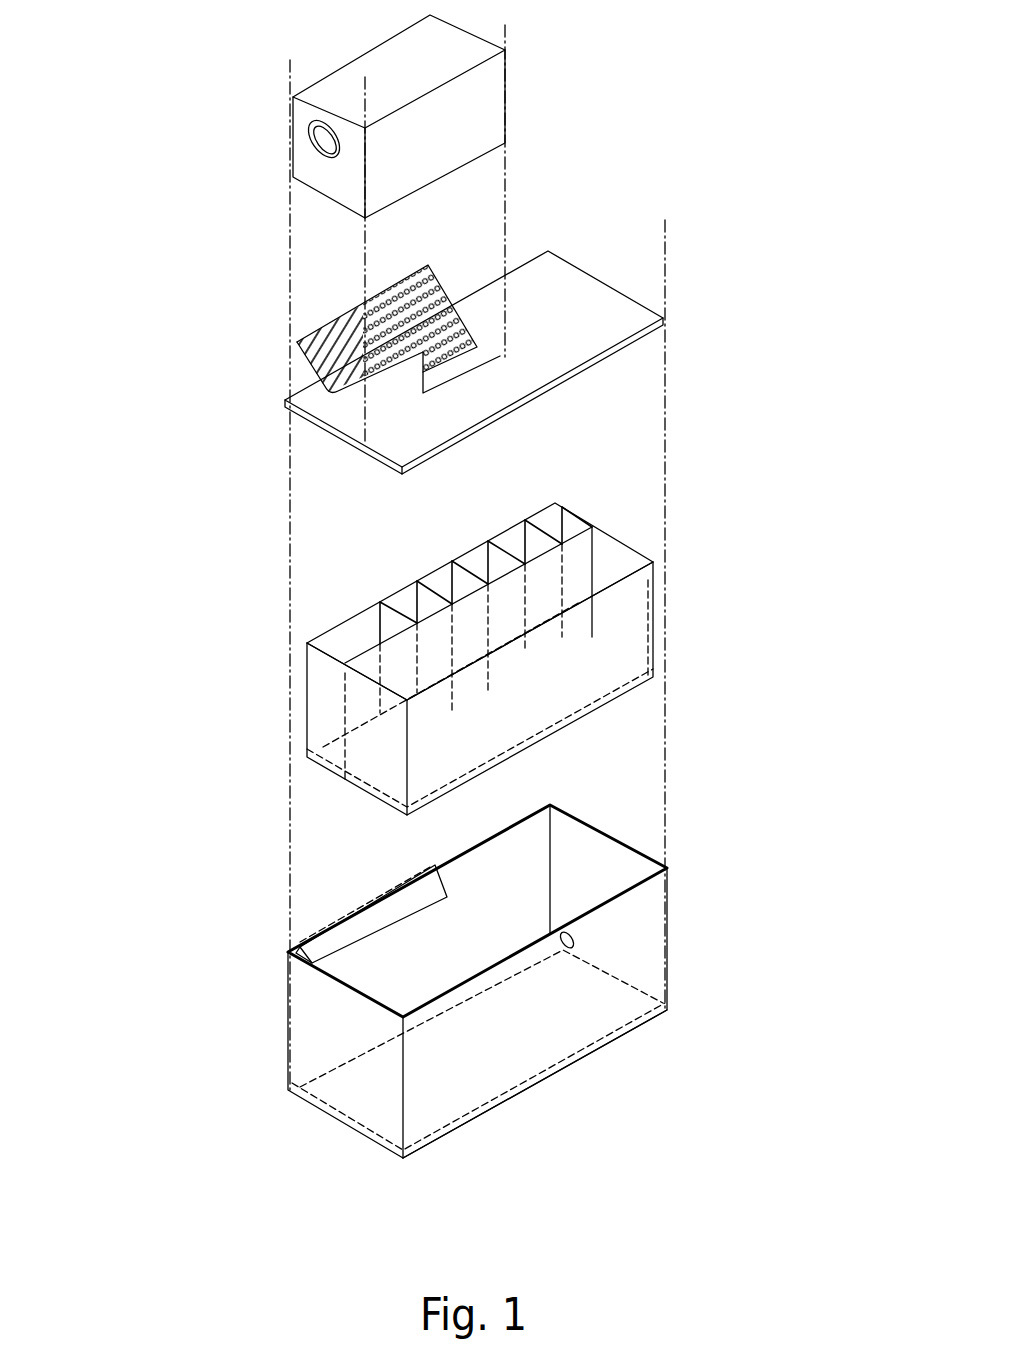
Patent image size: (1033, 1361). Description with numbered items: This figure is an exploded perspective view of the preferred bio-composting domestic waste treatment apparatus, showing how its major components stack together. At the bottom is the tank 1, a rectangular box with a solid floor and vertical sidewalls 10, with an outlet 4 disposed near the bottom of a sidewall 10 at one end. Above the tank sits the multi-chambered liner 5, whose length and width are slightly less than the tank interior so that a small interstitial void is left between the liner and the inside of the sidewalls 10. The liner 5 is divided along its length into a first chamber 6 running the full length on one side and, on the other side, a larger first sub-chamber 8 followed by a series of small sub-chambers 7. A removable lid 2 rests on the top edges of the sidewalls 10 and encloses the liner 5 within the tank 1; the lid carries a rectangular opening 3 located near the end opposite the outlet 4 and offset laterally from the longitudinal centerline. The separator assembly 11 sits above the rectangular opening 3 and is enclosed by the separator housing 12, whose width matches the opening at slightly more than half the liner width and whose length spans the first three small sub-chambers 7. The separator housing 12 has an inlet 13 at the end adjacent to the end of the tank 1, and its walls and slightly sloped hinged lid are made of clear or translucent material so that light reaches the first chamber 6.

The tank 1 is at (546, 981).
The removable lid 2 is at (590, 308).
The rectangular opening 3 is at (460, 370).
The outlet 4 is at (575, 940).
The multi-chambered liner 5 is at (507, 657).
The first chamber 6 is at (525, 713).
The small sub-chambers 7 is at (555, 500).
The first sub-chamber 8 is at (330, 638).
The sidewalls 10 is at (485, 1067).
The separator assembly 11 is at (287, 366).
The separator housing 12 is at (447, 110).
The inlet 13 is at (310, 135).